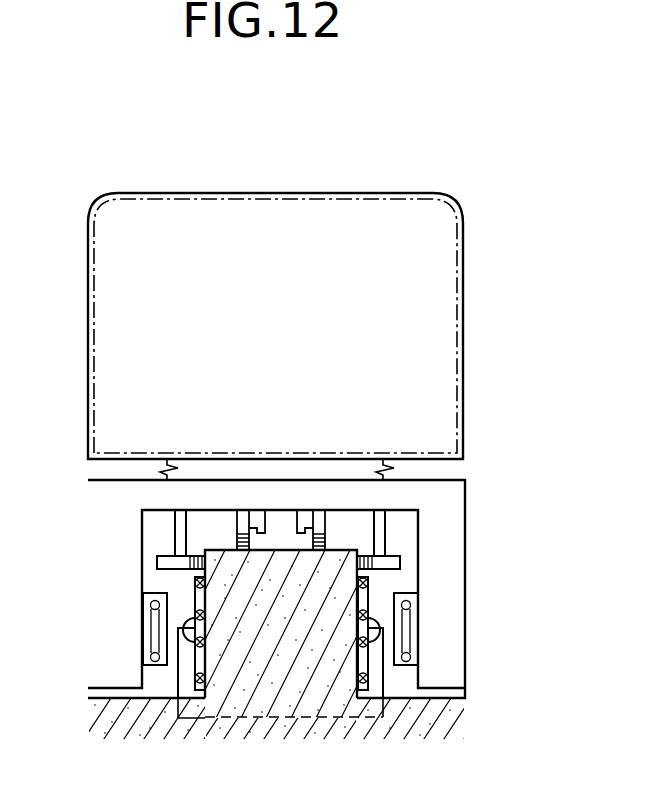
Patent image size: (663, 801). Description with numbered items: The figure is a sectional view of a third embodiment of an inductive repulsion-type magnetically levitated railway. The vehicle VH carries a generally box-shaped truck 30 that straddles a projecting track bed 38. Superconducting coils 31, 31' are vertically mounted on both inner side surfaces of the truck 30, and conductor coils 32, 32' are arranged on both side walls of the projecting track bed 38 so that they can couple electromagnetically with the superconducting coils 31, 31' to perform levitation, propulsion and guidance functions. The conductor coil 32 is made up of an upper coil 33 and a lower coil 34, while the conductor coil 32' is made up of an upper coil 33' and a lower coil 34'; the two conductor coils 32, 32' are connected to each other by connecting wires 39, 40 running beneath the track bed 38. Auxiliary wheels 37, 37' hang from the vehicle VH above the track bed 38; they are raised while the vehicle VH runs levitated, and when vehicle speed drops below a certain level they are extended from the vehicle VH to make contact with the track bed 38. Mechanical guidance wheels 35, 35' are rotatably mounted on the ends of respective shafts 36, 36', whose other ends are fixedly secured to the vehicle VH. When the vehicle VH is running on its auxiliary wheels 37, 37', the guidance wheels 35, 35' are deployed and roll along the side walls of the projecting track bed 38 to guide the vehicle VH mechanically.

The vehicle VH is at (420, 222).
The truck 30 is at (283, 495).
The superconducting coil 31 is at (99, 629).
The superconducting coil 31' is at (461, 629).
The conductor coil 32 is at (118, 633).
The conductor coil 32' is at (443, 614).
The upper coil 33 is at (185, 626).
The upper coil 33' is at (388, 628).
The lower coil 34 is at (171, 663).
The lower coil 34' is at (392, 663).
The mechanical guidance wheel 35 is at (118, 560).
The mechanical guidance wheel 35' is at (442, 537).
The shaft 36 is at (109, 532).
The shaft 36' is at (451, 515).
The auxiliary wheel 37 is at (217, 480).
The auxiliary wheel 37' is at (357, 480).
The projecting track bed 38 is at (232, 694).
The connecting wire 39 is at (287, 730).
The connecting wire 40 is at (322, 718).